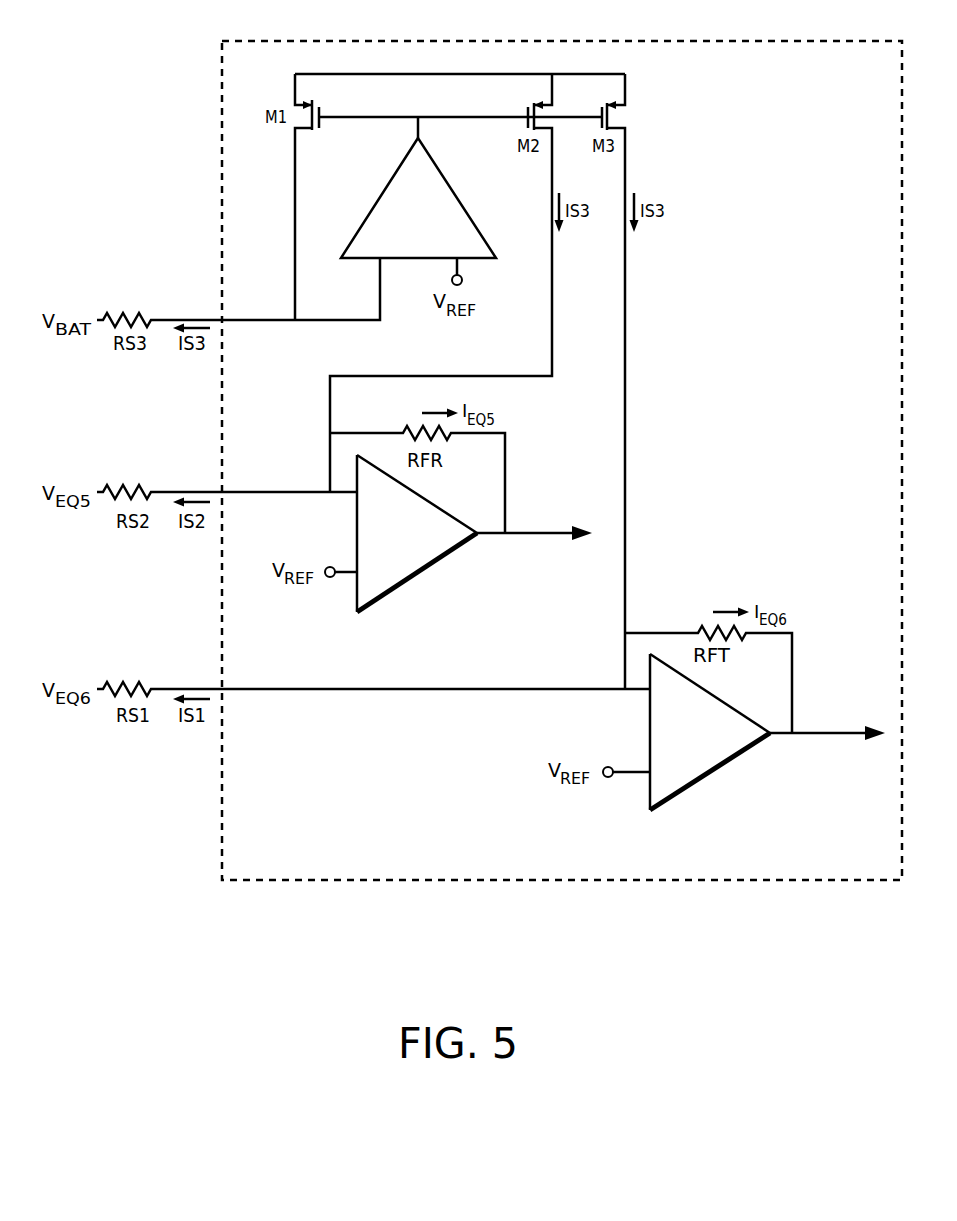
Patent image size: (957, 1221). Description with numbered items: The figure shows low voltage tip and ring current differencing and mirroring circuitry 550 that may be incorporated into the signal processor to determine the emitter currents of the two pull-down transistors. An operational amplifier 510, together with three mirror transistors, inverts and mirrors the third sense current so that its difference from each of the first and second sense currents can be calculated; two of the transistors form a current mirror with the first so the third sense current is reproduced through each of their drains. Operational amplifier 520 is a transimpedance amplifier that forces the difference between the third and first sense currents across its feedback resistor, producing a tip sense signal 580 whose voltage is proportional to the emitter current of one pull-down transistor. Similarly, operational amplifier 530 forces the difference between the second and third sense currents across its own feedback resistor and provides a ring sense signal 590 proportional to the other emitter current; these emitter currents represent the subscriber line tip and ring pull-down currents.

The current differencing and mirroring circuitry 550 is at (222, 104).
The operational amplifier 510 is at (418, 198).
The operational amplifier 530 is at (417, 533).
The operational amplifier 520 is at (710, 732).
The ring sense signal 590 is at (534, 497).
The tip sense signal 580 is at (827, 697).